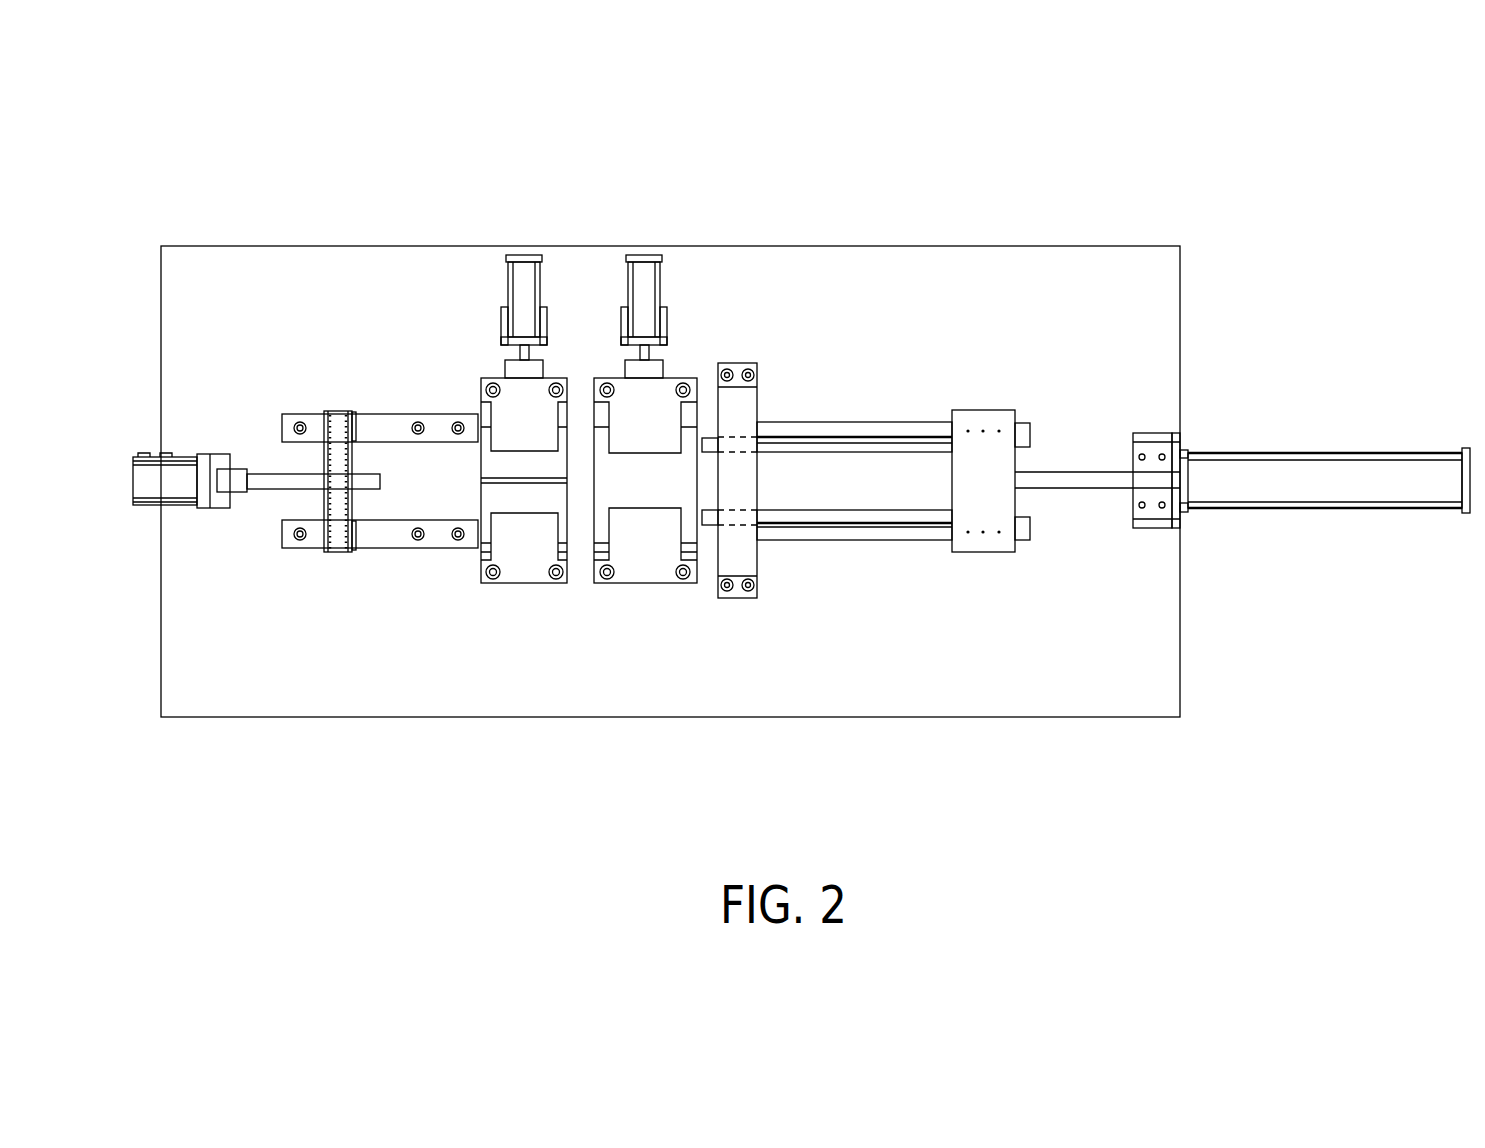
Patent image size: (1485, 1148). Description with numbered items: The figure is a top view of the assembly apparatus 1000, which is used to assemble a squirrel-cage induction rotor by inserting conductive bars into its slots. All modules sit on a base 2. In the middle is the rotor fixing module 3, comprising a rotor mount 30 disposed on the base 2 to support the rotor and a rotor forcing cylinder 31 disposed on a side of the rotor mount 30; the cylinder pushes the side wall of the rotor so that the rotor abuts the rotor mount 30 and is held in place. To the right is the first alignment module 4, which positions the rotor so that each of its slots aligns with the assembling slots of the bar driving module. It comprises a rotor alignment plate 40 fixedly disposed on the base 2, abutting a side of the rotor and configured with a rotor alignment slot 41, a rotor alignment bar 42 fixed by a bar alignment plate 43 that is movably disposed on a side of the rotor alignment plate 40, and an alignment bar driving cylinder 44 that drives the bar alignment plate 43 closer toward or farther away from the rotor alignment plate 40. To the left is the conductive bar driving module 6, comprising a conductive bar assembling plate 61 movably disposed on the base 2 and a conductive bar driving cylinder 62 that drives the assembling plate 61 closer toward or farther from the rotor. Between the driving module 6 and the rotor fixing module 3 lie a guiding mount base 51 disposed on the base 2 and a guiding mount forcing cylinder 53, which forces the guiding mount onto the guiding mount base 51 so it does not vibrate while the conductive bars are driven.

The assembly apparatus 1000 is at (1188, 146).
The base 2 is at (1153, 308).
The rotor fixing module 3 is at (745, 168).
The rotor mount 30 is at (696, 362).
The rotor forcing cylinder 31 is at (646, 242).
The first alignment module 4 is at (1079, 321).
The rotor alignment plate 40 is at (740, 400).
The rotor alignment slot 41 is at (748, 431).
The rotor alignment bar 42 is at (865, 445).
The bar alignment plate 43 is at (983, 420).
The alignment bar driving cylinder 44 is at (1334, 424).
The guiding mount base 51 is at (525, 599).
The guiding mount forcing cylinder 53 is at (525, 242).
The conductive bar driving module 6 is at (267, 336).
The conductive bar assembling plate 61 is at (338, 548).
The conductive bar driving cylinder 62 is at (136, 526).